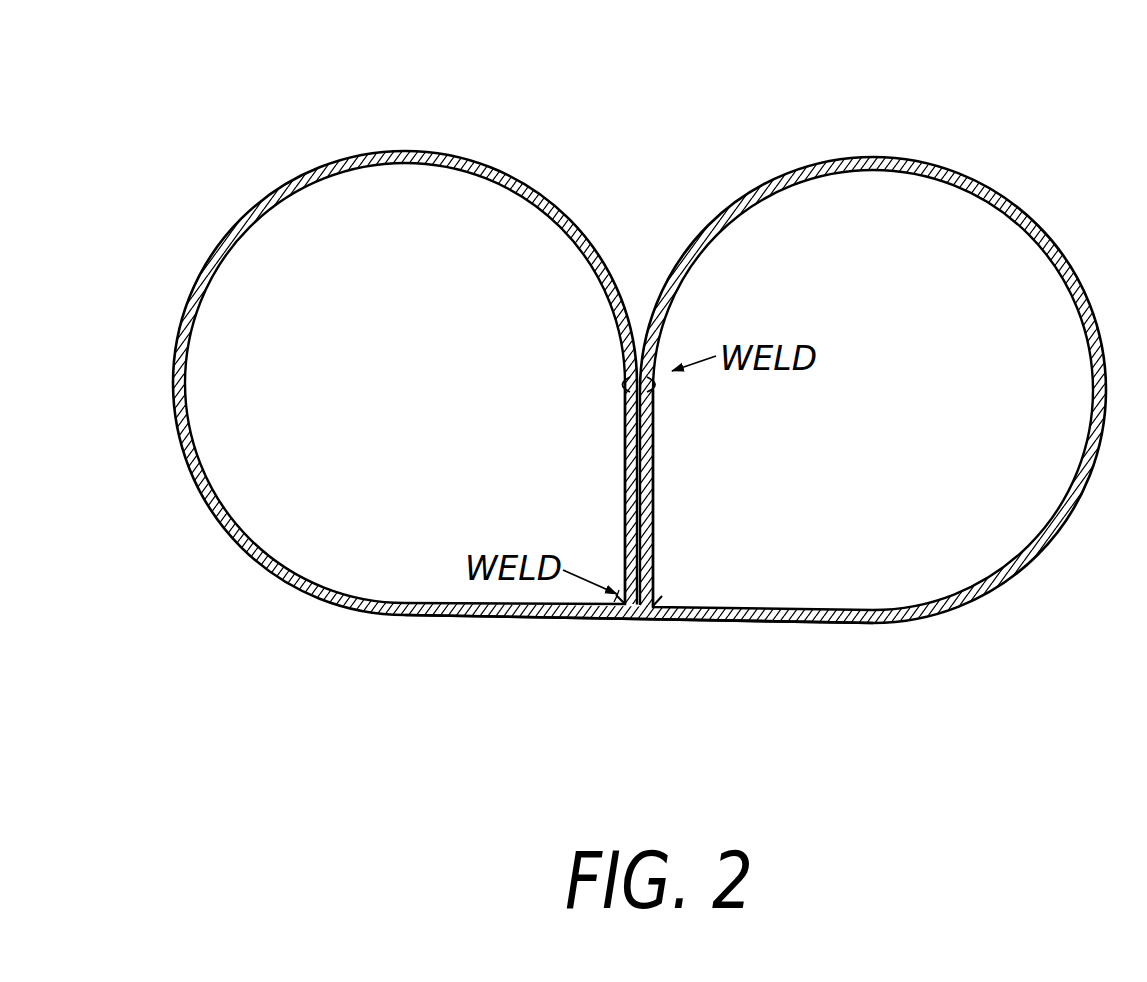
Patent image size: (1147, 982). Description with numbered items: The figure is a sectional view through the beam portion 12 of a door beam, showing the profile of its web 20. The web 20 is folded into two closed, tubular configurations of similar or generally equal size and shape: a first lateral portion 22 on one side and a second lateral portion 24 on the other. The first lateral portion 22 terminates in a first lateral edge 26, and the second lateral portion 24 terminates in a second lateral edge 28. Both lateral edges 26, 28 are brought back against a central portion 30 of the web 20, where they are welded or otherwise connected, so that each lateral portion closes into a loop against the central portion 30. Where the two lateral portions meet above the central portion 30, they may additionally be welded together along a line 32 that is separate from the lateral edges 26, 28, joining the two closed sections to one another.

The beam portion 12 is at (901, 138).
The web 20 is at (821, 627).
The first lateral portion 22 is at (1015, 198).
The second lateral portion 24 is at (469, 153).
The first lateral edge 26 is at (655, 591).
The second lateral edge 28 is at (625, 567).
The central portion 30 is at (637, 620).
The line 32 is at (626, 379).